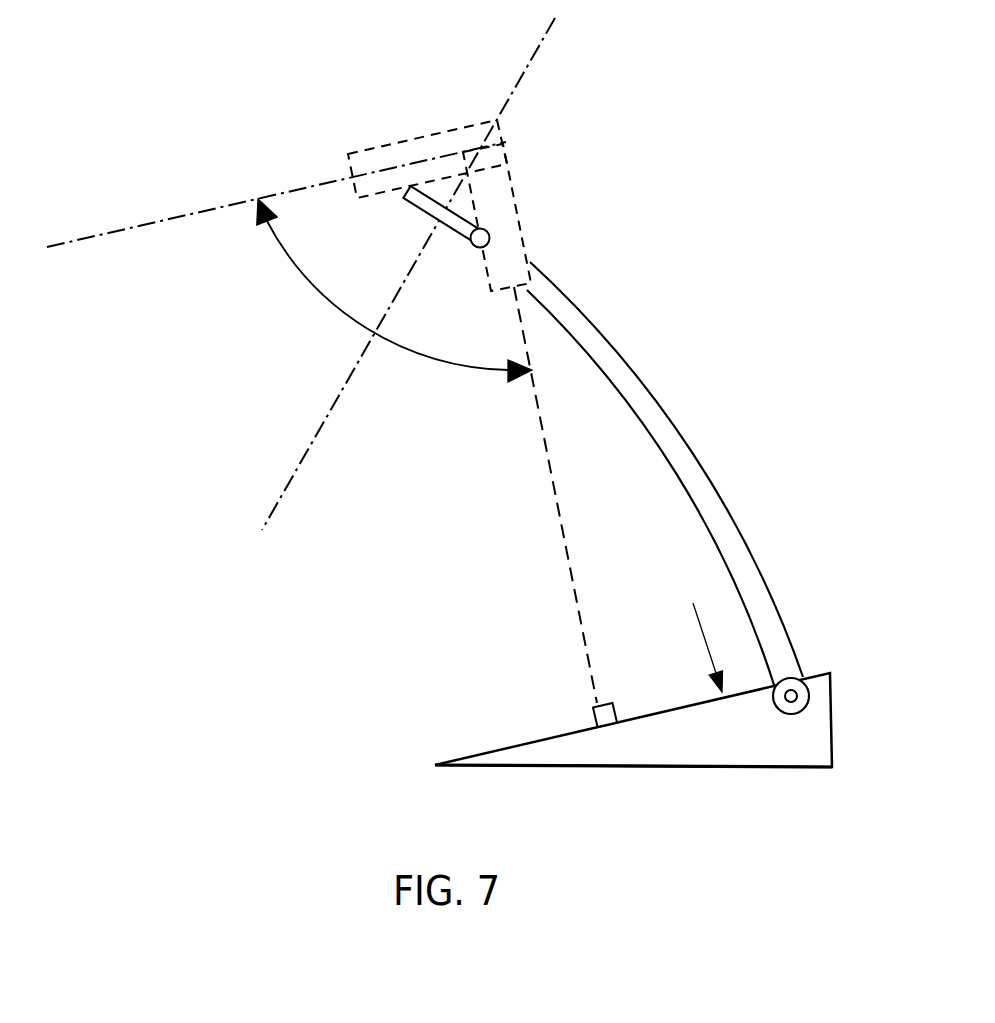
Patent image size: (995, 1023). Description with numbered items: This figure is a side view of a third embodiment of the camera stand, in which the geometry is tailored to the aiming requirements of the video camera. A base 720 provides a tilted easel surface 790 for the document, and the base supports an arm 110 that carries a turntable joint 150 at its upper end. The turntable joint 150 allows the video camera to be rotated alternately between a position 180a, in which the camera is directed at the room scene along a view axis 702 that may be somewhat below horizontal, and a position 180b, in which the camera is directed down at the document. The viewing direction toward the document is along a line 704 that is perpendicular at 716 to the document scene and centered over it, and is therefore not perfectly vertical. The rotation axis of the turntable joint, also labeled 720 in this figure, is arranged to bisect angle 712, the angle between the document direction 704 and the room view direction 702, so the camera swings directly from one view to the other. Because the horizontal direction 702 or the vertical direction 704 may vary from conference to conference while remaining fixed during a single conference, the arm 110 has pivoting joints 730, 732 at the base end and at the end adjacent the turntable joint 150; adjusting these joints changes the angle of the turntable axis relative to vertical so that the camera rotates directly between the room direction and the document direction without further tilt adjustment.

The arm 110 is at (665, 475).
The turntable joint 150 is at (462, 243).
The camera position directed at room scene 180a is at (383, 156).
The camera position directed at document scene 180b is at (536, 217).
The view axis 702 is at (276, 194).
The line 704 is at (583, 495).
The angle 712 is at (300, 263).
The perpendicular point 716 is at (605, 703).
The base 720 is at (317, 435).
The pivoting joint 730 is at (834, 661).
The pivoting joint 732 is at (487, 235).
The tilted easel surface 790 is at (689, 631).